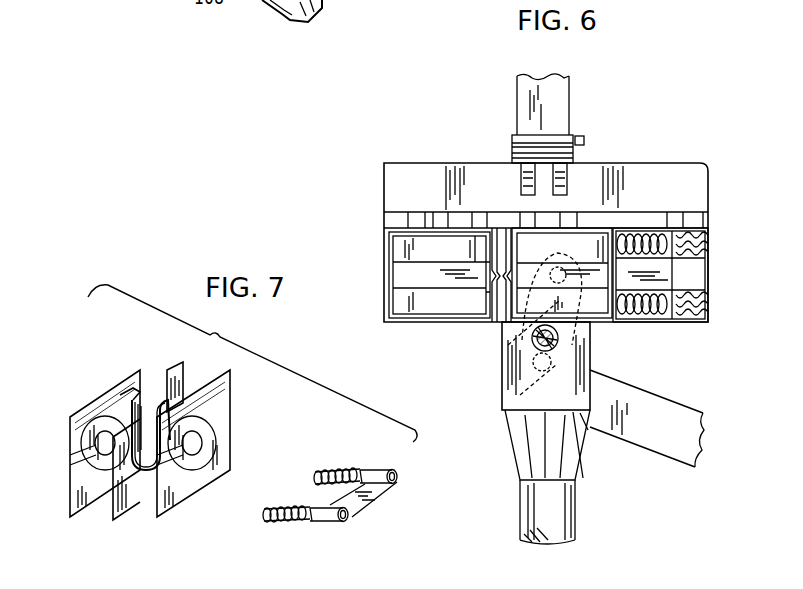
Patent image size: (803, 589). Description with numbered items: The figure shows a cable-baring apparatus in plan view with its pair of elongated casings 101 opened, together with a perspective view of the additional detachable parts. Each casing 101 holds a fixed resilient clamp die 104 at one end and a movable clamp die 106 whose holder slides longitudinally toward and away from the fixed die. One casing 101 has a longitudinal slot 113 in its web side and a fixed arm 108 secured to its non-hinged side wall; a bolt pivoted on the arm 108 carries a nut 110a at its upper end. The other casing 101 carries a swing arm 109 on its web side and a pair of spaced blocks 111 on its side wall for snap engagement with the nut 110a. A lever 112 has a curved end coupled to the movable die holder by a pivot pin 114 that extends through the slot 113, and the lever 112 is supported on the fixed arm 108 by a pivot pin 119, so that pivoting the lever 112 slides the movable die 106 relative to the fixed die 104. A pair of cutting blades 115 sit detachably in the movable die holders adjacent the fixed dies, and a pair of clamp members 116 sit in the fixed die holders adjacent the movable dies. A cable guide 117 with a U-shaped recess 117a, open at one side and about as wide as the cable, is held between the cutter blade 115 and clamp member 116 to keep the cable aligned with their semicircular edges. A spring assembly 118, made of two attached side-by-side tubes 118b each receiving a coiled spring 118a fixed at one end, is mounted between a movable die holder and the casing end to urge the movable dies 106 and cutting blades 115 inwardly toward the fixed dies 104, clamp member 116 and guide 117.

In FIG. 6, the elongated casing 101 is at (696, 182).
In FIG. 6, the fixed resilient clamp die 104 is at (410, 306).
In FIG. 6, the movable clamp die 106 is at (600, 322).
In FIG. 6, the fixed arm 108 is at (512, 440).
In FIG. 6, the swing arm 109 is at (555, 92).
In FIG. 6, the nut 110a is at (503, 416).
In FIG. 6, the spaced block 111 is at (568, 175).
In FIG. 6, the lever 112 is at (650, 410).
In FIG. 6, the longitudinal slot 113 is at (662, 283).
In FIG. 6, the pivot pin 114 is at (558, 276).
In FIG. 6, the cutting blade 115 is at (522, 338).
In FIG. 7, the cutting blade 115 is at (190, 400).
In FIG. 6, the clamp member 116 is at (492, 310).
In FIG. 7, the clamp member 116 is at (66, 472).
In FIG. 6, the cable guide 117 is at (494, 324).
In FIG. 7, the cable guide 117 is at (128, 505).
In FIG. 7, the U-shaped recess 117a is at (185, 388).
In FIG. 6, the spring assembly 118 is at (660, 316).
In FIG. 7, the spring assembly 118 is at (364, 461).
In FIG. 7, the coiled spring 118a is at (285, 522).
In FIG. 7, the tube 118b is at (320, 518).
In FIG. 6, the pivot pin 119 is at (548, 368).